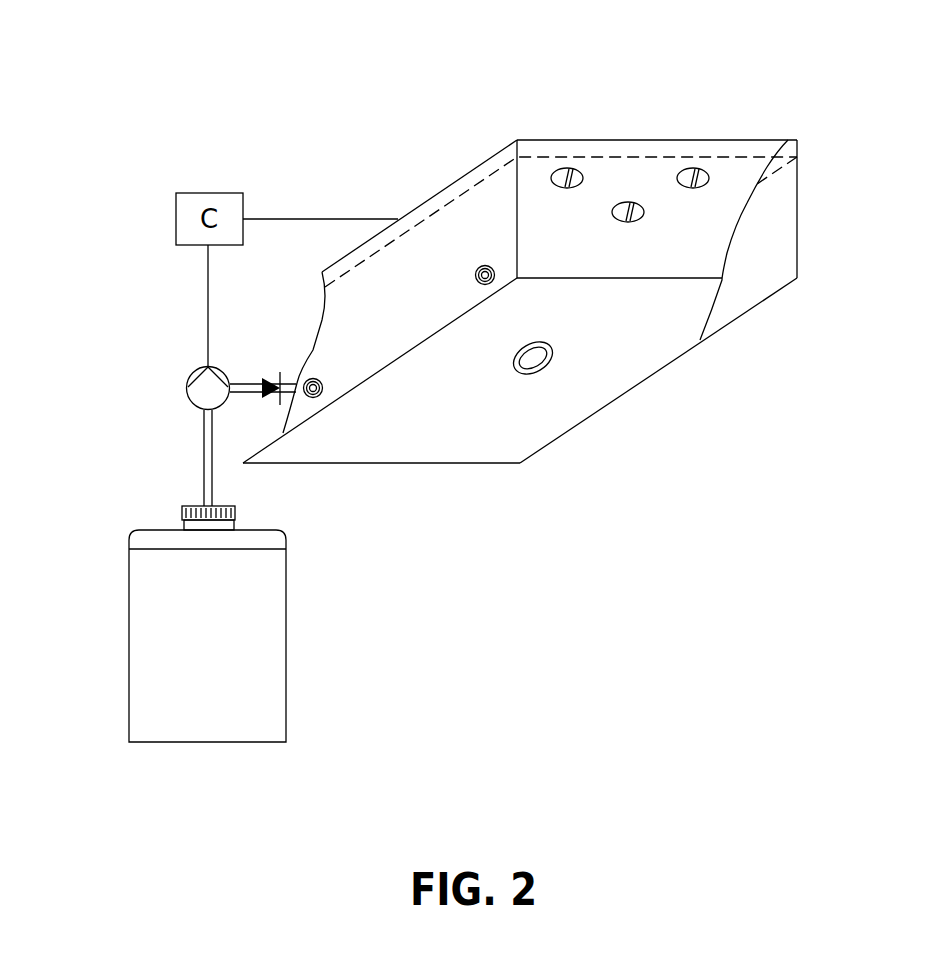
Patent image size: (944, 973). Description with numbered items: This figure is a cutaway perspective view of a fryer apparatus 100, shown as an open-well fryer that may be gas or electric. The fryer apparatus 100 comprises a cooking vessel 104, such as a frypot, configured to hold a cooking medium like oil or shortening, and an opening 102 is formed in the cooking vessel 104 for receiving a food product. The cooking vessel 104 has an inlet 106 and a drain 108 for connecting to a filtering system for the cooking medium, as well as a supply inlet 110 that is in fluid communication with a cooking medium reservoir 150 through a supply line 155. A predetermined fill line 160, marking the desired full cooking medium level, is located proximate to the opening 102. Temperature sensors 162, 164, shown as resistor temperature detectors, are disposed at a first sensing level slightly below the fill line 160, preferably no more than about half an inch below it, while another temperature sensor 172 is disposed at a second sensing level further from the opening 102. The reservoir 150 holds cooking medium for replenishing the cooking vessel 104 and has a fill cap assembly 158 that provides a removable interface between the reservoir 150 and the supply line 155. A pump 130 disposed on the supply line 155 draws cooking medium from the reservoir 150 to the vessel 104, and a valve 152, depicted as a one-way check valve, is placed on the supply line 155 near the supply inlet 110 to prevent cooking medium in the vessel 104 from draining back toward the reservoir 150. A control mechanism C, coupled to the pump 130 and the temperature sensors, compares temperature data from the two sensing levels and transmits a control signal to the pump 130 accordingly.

The fryer apparatus 100 is at (461, 122).
The opening 102 is at (760, 148).
The cooking vessel 104 is at (653, 333).
The inlet 106 is at (485, 265).
The drain 108 is at (543, 367).
The supply inlet 110 is at (320, 396).
The pump 130 is at (195, 373).
The cooking medium reservoir 150 is at (263, 648).
The valve 152 is at (268, 376).
The supply line 155 is at (203, 460).
The fill cap assembly 158 is at (182, 512).
The fill line 160 is at (374, 255).
The temperature sensor 162 is at (562, 168).
The temperature sensor 164 is at (690, 168).
The temperature sensor 172 is at (627, 202).